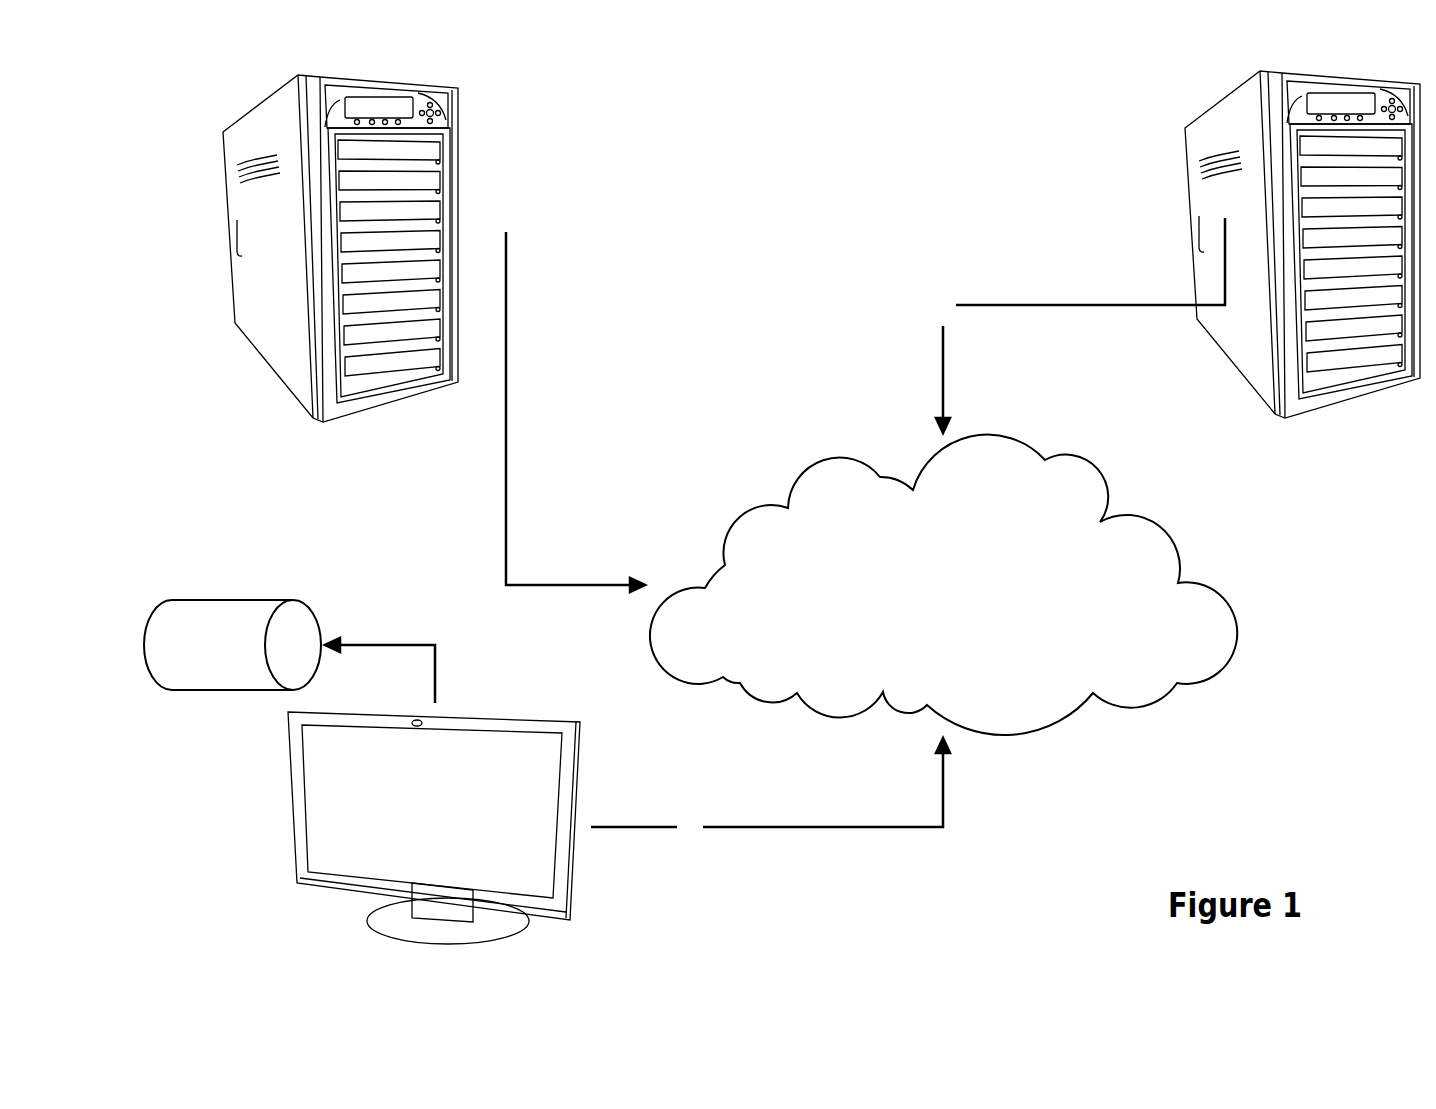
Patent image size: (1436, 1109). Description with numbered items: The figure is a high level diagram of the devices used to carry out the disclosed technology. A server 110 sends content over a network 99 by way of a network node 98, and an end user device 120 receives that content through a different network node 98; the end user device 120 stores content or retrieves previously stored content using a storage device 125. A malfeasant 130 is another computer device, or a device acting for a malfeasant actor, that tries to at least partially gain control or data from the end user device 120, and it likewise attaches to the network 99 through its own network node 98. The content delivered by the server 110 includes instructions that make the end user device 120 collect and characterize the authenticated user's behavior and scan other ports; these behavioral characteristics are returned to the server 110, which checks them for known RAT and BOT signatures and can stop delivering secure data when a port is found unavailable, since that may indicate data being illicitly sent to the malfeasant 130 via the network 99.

The server 110 is at (340, 265).
The malfeasant 130 is at (1302, 295).
The network 99 is at (943, 585).
The storage device 125 is at (232, 645).
The end user device 120 is at (424, 848).
The network node 98 is at (405, 214).